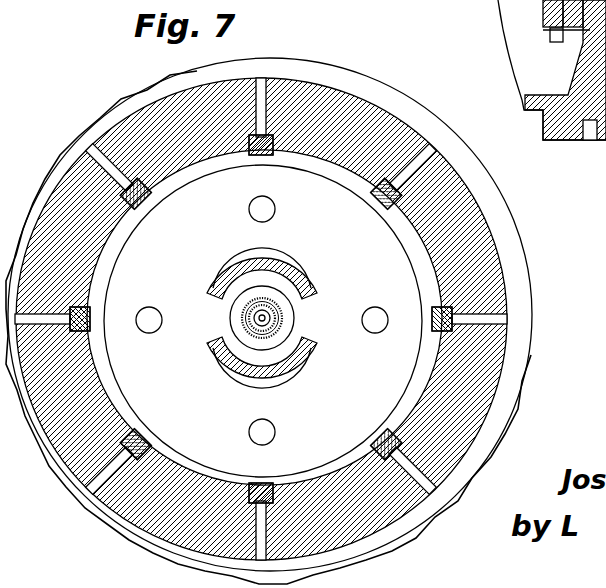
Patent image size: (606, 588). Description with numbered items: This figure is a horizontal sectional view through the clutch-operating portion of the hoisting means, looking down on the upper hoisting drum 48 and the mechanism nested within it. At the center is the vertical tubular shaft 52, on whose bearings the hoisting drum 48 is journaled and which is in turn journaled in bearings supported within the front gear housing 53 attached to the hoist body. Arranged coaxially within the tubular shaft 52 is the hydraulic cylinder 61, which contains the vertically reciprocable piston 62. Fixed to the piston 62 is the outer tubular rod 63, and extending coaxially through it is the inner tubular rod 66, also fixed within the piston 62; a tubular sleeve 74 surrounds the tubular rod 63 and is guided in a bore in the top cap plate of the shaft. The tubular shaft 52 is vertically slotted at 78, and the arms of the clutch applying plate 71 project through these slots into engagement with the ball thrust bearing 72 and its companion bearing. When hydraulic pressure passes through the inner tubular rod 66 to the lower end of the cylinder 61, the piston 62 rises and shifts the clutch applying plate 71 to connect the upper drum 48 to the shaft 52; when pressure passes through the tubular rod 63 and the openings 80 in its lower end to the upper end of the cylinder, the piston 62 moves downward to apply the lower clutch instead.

The hoisting drum 48 is at (475, 220).
The clutch applying plate 71 is at (400, 277).
The tubular shaft 52 is at (430, 343).
The slots 78 is at (380, 183).
The tubular rod 66 is at (217, 285).
The ball thrust bearing 72 is at (277, 340).
The tubular sleeve 74 is at (280, 300).
The tubular rod 63 is at (262, 297).
The piston 62 is at (540, 68).
The front gear housing 53 is at (555, 118).
The hydraulic cylinder 61 is at (505, 10).
The openings 80 is at (515, 42).